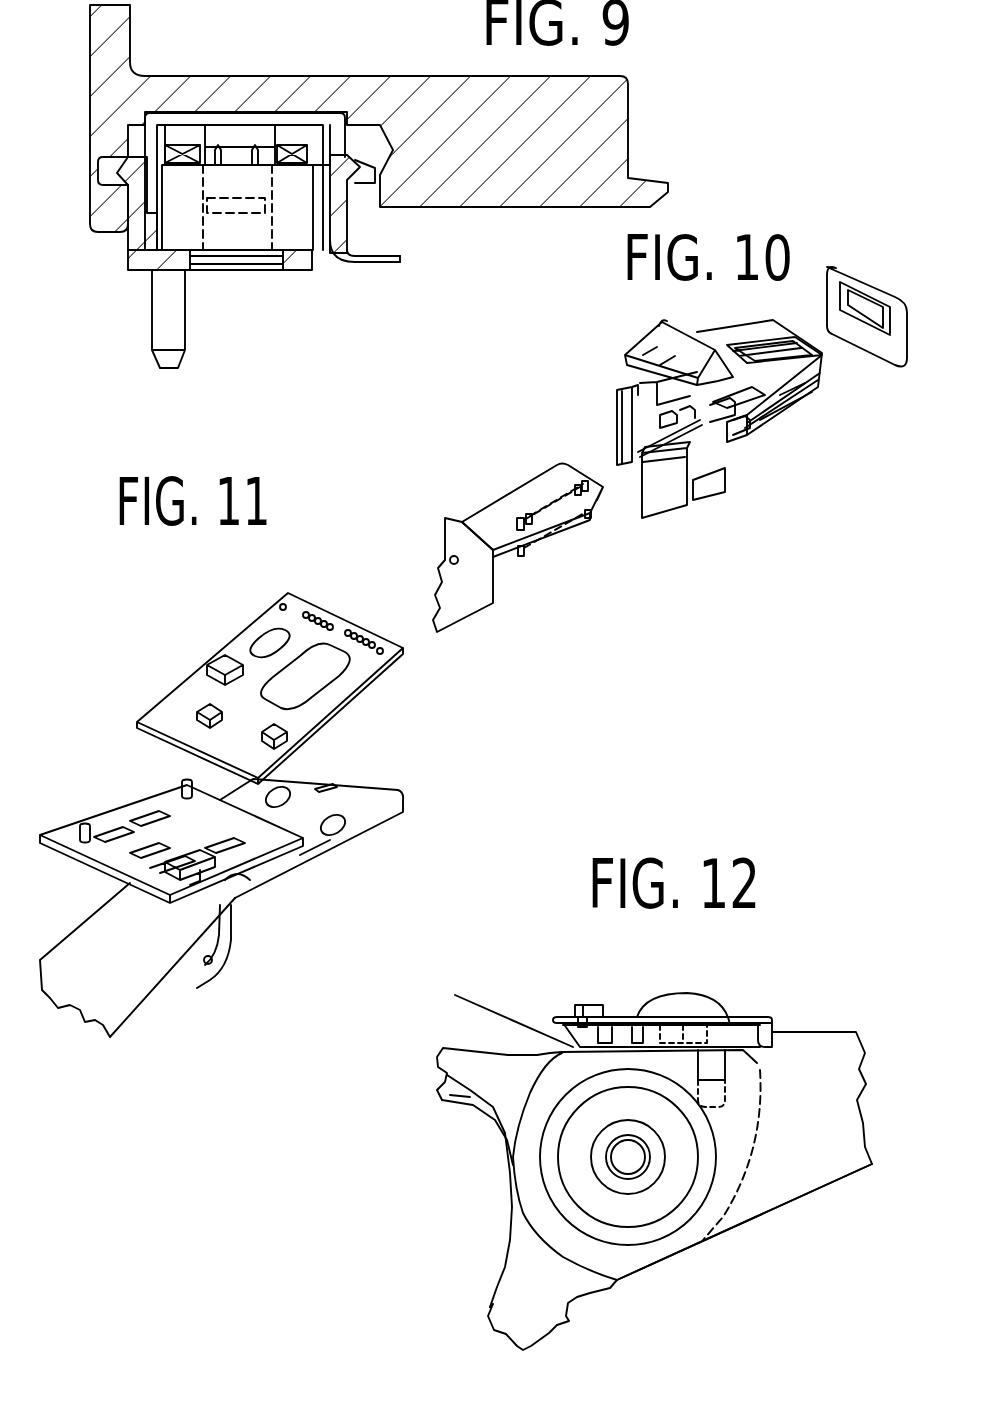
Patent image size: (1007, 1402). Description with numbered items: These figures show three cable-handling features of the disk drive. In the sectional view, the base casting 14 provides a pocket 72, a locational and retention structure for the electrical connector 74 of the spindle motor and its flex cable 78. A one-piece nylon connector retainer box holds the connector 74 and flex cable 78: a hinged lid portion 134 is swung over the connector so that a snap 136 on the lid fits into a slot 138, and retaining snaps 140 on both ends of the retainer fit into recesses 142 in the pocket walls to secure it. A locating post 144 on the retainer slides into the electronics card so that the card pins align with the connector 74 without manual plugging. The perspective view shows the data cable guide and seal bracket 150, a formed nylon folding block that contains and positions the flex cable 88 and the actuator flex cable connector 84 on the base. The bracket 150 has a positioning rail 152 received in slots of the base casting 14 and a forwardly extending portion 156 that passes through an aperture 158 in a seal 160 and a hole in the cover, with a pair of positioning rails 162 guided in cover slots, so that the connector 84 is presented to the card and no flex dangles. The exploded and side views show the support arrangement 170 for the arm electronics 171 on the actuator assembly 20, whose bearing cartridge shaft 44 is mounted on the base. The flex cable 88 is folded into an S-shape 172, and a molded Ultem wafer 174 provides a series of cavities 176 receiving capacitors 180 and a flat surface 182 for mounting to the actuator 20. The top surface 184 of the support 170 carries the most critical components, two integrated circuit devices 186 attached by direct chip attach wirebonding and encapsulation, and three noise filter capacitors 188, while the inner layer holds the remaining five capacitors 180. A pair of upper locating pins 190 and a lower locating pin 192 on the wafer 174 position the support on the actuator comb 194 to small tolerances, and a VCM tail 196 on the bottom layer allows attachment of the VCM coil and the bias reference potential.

In FIG. 9, the base casting 14 is at (247, 87).
In FIG. 12, the actuator assembly 20 is at (831, 1021).
In FIG. 12, the actuator bearing cartridge shaft 44 is at (625, 1147).
In FIG. 9, the pocket 72 is at (296, 108).
In FIG. 9, the electrical connector 74 is at (283, 212).
In FIG. 9, the flex cable 78 is at (402, 266).
In FIG. 10, the actuator flex cable connector 84 is at (524, 476).
In FIG. 10, the flex cable 88 is at (477, 590).
In FIG. 11, the flex cable 88 is at (100, 935).
In FIG. 12, the flex cable 88 is at (494, 1004).
In FIG. 9, the hinged lid portion 134 is at (353, 262).
In FIG. 9, the snap 136 is at (195, 157).
In FIG. 9, the slot 138 is at (190, 147).
In FIG. 9, the retaining snaps 140 is at (128, 162).
In FIG. 9, the recesses 142 is at (100, 180).
In FIG. 9, the locating post 144 is at (170, 322).
In FIG. 10, the data cable guide and seal bracket 150 is at (615, 423).
In FIG. 10, the positioning rail 152 is at (688, 436).
In FIG. 10, the forwardly extending portion 156 is at (783, 402).
In FIG. 10, the aperture 158 is at (872, 307).
In FIG. 10, the seal 160 is at (867, 360).
In FIG. 10, the positioning rails 162 is at (797, 378).
In FIG. 11, the support arrangement 170 is at (375, 729).
In FIG. 11, the arm electronics 171 is at (262, 622).
In FIG. 11, the S-shape 172 is at (414, 811).
In FIG. 12, the S-shape 172 is at (629, 1011).
In FIG. 11, the molded wafer 174 is at (128, 797).
In FIG. 12, the molded wafer 174 is at (719, 1037).
In FIG. 11, the cavities 176 is at (233, 838).
In FIG. 11, the capacitors 180 is at (339, 792).
In FIG. 11, the flat surface 182 is at (316, 850).
In FIG. 12, the flat surface 182 is at (717, 1042).
In FIG. 11, the top surface 184 is at (367, 663).
In FIG. 11, the integrated circuit devices 186 is at (262, 672).
In FIG. 11, the noise filter capacitors 188 is at (200, 698).
In FIG. 11, the upper locating pins 190 is at (182, 781).
In FIG. 12, the upper locating pins 190 is at (583, 1014).
In FIG. 11, the lower locating pin 192 is at (253, 886).
In FIG. 12, the lower locating pin 192 is at (733, 1065).
In FIG. 12, the actuator comb 194 is at (755, 1227).
In FIG. 11, the VCM tail 196 is at (197, 986).
In FIG. 12, the VCM tail 196 is at (526, 1097).